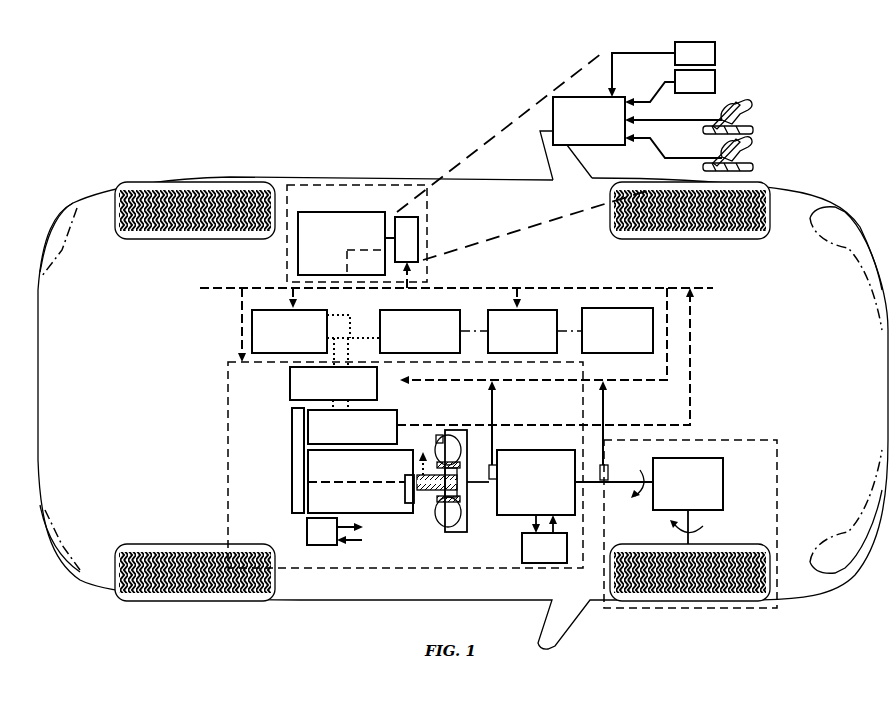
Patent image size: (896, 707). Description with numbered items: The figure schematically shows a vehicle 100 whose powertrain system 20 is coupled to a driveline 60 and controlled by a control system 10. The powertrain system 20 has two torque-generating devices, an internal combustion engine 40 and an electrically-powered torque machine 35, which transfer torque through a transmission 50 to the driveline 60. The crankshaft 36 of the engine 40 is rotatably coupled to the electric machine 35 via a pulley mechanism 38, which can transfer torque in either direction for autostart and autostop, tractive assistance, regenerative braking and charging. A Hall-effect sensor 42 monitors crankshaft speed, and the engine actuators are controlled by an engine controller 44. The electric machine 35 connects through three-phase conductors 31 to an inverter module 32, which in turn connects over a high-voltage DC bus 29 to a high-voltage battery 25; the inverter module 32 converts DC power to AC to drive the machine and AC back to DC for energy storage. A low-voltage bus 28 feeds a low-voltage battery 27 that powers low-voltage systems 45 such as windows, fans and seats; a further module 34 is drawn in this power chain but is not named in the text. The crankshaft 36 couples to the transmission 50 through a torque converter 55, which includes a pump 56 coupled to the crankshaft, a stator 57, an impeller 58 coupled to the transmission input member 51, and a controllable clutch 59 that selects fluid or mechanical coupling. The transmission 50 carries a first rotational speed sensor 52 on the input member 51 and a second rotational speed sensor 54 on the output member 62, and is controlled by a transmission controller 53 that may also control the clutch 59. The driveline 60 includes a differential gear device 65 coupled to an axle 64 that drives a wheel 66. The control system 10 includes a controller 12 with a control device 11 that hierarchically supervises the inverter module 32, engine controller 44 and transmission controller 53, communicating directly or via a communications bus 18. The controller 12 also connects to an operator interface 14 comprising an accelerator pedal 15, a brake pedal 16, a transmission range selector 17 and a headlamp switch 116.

The vehicle 100 is at (463, 390).
The control system 10 is at (468, 170).
The control device 11 is at (366, 262).
The controller 12 is at (341, 243).
The operator interface 14 is at (589, 121).
The accelerator pedal 15 is at (720, 146).
The brake pedal 16 is at (720, 116).
The transmission range selector 17 is at (670, 88).
The headlamp switch 116 is at (661, 69).
The communications bus 18 is at (267, 283).
The powertrain system 20 is at (590, 416).
The high-voltage energy storage device 25 is at (289, 320).
The low-voltage battery 27 is at (535, 320).
The low-voltage bus 28 is at (486, 326).
The high-voltage DC bus 29 is at (367, 337).
The three-phase conductors 31 is at (348, 405).
The inverter module 32 is at (333, 383).
The control module 34 is at (434, 331).
The electric machine 35 is at (352, 427).
The crankshaft 36 is at (318, 482).
The pulley mechanism 38 is at (293, 463).
The internal combustion engine 40 is at (360, 481).
The Hall-effect sensor 42 is at (410, 503).
The engine controller 44 is at (307, 537).
The low-voltage systems 45 is at (617, 330).
The transmission 50 is at (536, 482).
The input member 51 is at (485, 484).
The first rotational speed sensor 52 is at (496, 467).
The transmission controller 53 is at (544, 539).
The second rotational speed sensor 54 is at (609, 475).
The torque converter 55 is at (425, 518).
The pump 56 is at (454, 508).
The stator 57 is at (449, 512).
The impeller 58 is at (440, 517).
The controllable clutch 59 is at (436, 438).
The driveline 60 is at (713, 435).
The output member 62 is at (600, 475).
The axle 64 is at (702, 525).
The differential gear device 65 is at (688, 484).
The wheel 66 is at (661, 540).